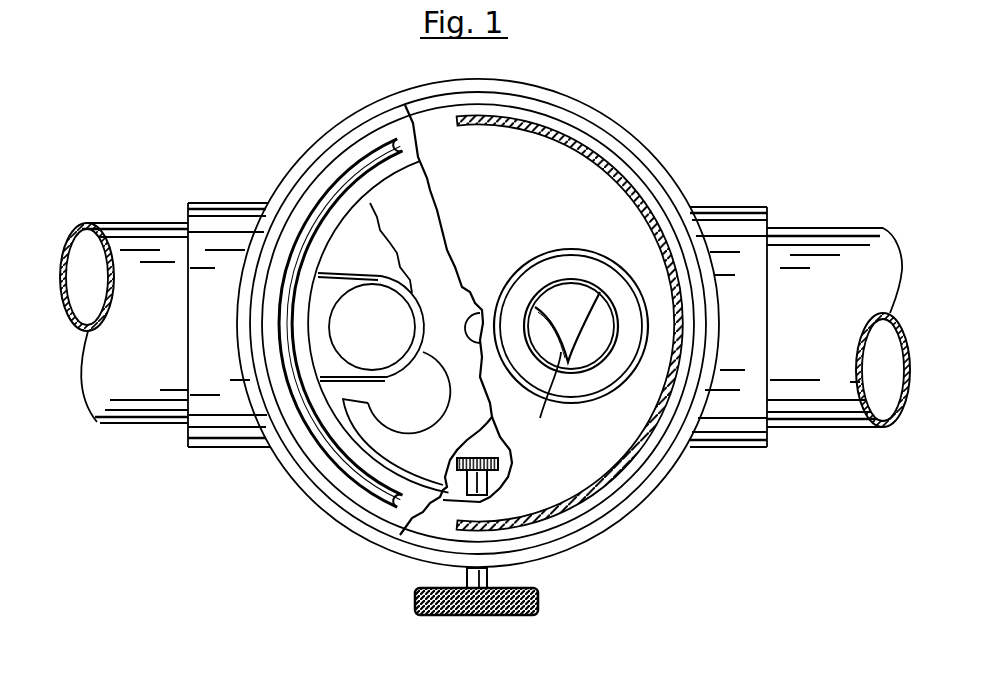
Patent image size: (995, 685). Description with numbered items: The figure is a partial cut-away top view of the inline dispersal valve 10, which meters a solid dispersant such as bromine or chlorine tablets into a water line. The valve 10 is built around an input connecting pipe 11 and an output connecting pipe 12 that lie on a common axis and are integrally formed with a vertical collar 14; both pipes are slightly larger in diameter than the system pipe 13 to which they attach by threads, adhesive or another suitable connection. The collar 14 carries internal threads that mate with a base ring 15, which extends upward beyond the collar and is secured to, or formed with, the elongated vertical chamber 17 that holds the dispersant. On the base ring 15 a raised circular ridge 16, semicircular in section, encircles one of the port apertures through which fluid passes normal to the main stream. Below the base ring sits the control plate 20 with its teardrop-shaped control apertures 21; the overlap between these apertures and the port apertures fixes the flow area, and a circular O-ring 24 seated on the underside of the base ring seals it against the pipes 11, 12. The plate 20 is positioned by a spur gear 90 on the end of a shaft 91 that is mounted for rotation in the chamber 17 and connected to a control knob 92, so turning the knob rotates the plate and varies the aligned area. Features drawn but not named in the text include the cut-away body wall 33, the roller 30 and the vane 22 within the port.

The dispersal valve 10 is at (270, 476).
The input connecting pipe 11 is at (208, 200).
The output connecting pipe 12 is at (735, 200).
The pipe 13 is at (130, 222).
The vertical collar 14 is at (345, 120).
The base ring 15 is at (620, 150).
The raised circular ridge 16 is at (612, 300).
The chamber 17 is at (535, 123).
The control plate 20 is at (418, 268).
The control aperture 21 is at (399, 425).
The vane 22 is at (548, 398).
The O-ring 24 is at (327, 190).
The roller 30 is at (375, 287).
The annular wall 33 is at (338, 228).
The spur gear 90 is at (500, 462).
The shaft 91 is at (490, 482).
The control knob 92 is at (540, 603).